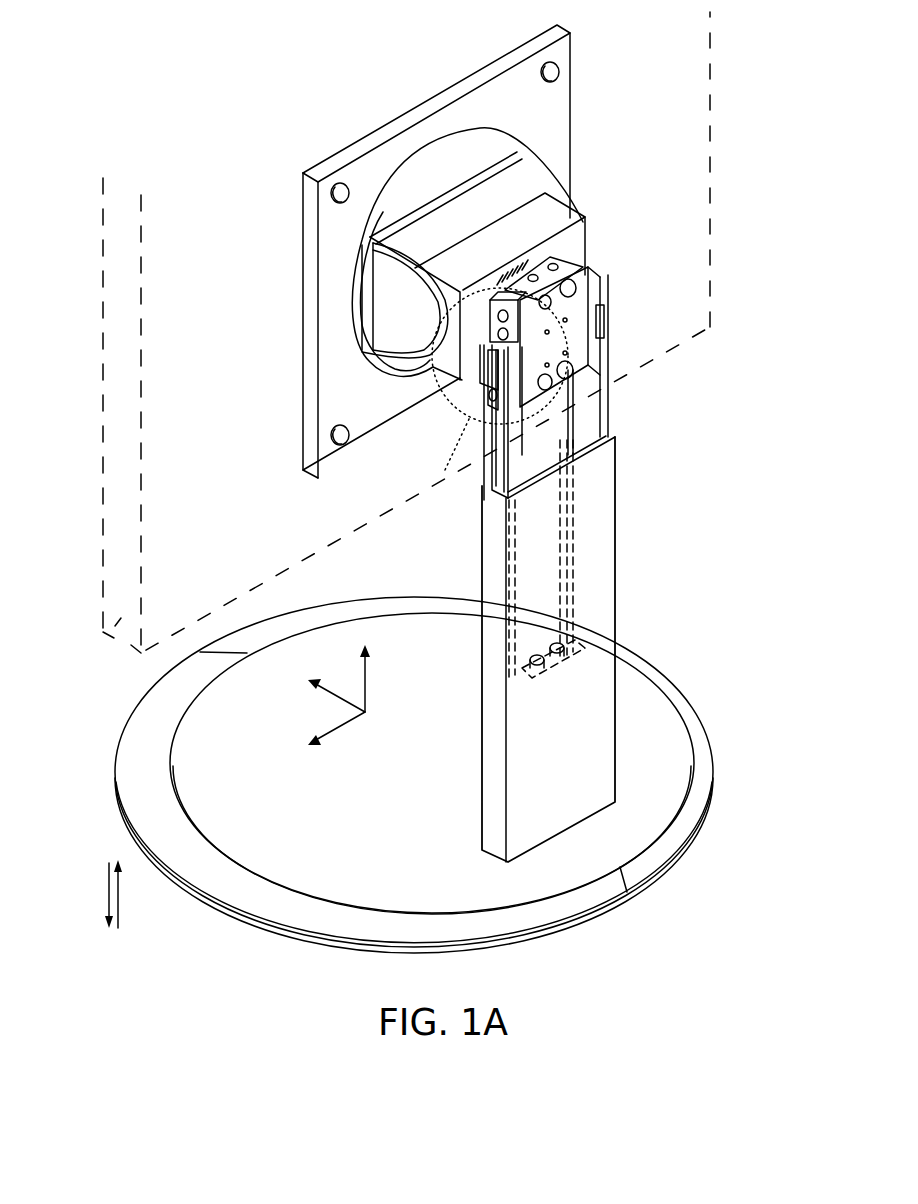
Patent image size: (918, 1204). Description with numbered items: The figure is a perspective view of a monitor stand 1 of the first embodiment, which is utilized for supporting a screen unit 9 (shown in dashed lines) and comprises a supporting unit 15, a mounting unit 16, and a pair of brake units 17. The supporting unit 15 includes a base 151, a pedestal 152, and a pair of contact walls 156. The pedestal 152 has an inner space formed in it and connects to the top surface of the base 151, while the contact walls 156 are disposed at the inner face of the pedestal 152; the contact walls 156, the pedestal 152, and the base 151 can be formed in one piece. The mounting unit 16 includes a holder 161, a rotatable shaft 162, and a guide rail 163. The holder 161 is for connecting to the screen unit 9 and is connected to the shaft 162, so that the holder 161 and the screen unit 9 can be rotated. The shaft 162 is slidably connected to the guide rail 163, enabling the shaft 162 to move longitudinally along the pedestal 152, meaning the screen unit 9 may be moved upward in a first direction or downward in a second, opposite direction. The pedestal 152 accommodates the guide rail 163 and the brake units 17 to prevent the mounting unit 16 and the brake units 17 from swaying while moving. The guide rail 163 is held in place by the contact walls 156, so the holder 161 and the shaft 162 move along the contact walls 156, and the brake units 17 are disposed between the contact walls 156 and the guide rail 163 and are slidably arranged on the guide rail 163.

The monitor stand 1 is at (189, 157).
The screen unit 9 is at (116, 640).
The supporting unit 15 is at (764, 880).
The base 151 is at (643, 823).
The pedestal 152 is at (597, 732).
The contact walls 156 is at (608, 423).
The mounting unit 16 is at (762, 120).
The holder 161 is at (550, 122).
The rotatable shaft 162 is at (590, 216).
The guide rail 163 is at (598, 405).
The brake units 17 is at (610, 322).